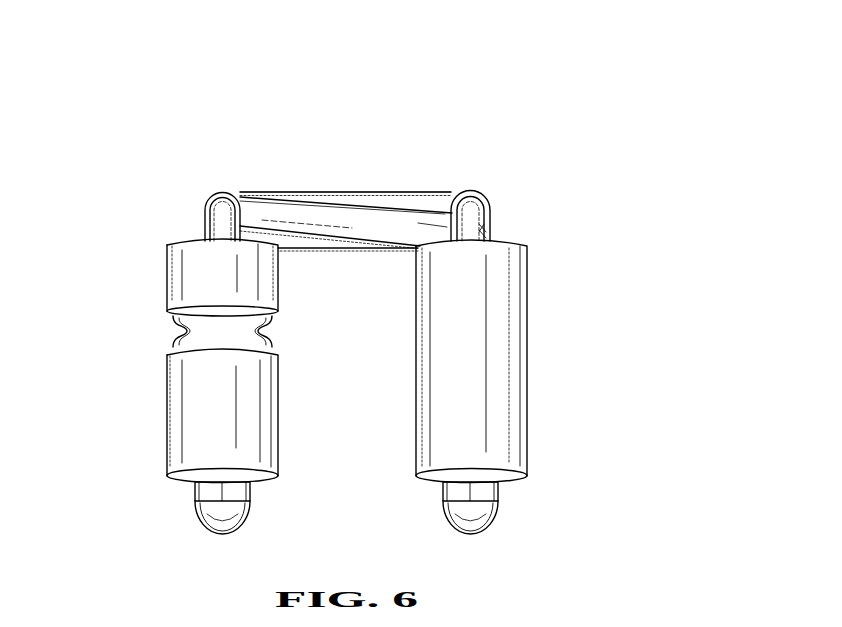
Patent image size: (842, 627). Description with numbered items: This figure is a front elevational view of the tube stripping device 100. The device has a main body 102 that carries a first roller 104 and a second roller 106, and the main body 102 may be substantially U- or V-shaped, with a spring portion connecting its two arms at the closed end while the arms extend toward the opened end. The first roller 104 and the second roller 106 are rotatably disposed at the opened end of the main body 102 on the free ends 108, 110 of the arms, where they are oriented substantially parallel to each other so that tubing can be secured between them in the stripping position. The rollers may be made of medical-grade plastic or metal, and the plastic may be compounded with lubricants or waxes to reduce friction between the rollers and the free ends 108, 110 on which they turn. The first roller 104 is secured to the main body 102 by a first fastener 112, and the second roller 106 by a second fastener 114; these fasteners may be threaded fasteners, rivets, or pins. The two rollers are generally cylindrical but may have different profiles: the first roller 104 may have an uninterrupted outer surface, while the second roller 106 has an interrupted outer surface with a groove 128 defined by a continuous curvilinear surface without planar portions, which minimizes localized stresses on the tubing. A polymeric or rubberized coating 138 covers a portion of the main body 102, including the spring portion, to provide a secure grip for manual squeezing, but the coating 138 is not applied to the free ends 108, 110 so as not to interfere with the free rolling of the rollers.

The tube stripping device 100 is at (443, 159).
The main body 102 is at (353, 189).
The first roller 104 is at (527, 345).
The second roller 106 is at (167, 418).
The free end 108 is at (473, 230).
The free end 110 is at (210, 216).
The first fastener 112 is at (471, 526).
The second fastener 114 is at (222, 526).
The groove 128 is at (170, 333).
The polymeric or rubberized coating 138 is at (491, 207).